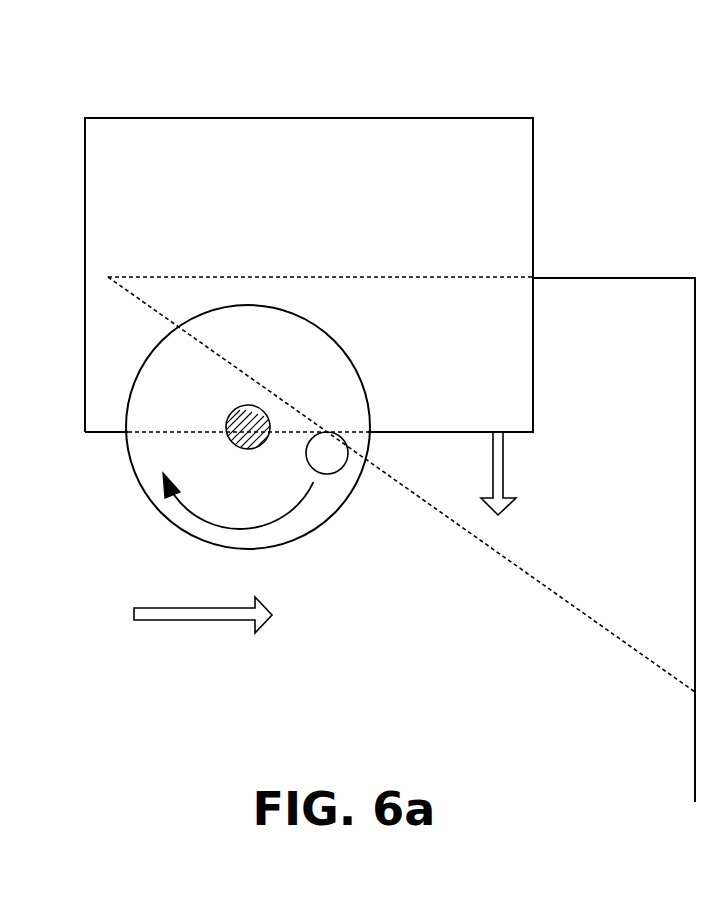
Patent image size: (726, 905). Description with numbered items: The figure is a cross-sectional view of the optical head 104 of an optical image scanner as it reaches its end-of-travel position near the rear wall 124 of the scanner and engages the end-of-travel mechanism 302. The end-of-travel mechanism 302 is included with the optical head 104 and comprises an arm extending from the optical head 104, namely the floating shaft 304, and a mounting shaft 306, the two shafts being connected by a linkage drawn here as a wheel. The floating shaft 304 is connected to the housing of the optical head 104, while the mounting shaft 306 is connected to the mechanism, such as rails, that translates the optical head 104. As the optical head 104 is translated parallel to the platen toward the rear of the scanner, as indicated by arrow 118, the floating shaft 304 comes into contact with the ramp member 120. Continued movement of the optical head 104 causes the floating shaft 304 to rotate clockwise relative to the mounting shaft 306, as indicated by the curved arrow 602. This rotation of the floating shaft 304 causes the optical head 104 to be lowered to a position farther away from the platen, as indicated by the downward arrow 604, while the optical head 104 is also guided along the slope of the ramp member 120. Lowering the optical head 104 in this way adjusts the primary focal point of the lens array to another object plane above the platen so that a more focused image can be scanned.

The optical head 104 is at (307, 118).
The ramp member 120 is at (623, 278).
The rear wall 124 is at (695, 737).
The end-of-travel mechanism 302 is at (357, 299).
The floating shaft 304 is at (343, 439).
The mounting shaft 306 is at (263, 405).
The clockwise rotation of floating shaft 602 is at (290, 510).
The lowering of optical head 604 is at (503, 462).
The carriage travel direction 118 is at (171, 620).